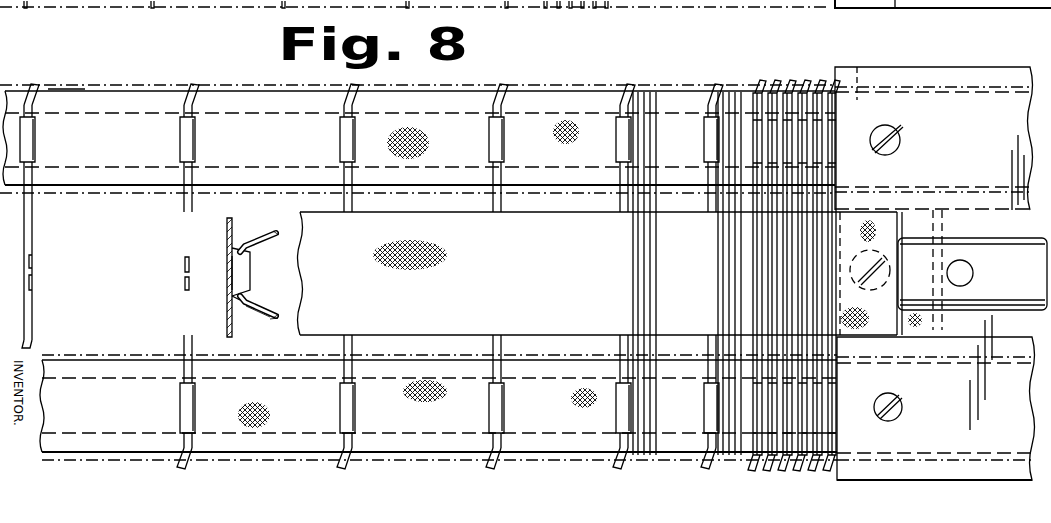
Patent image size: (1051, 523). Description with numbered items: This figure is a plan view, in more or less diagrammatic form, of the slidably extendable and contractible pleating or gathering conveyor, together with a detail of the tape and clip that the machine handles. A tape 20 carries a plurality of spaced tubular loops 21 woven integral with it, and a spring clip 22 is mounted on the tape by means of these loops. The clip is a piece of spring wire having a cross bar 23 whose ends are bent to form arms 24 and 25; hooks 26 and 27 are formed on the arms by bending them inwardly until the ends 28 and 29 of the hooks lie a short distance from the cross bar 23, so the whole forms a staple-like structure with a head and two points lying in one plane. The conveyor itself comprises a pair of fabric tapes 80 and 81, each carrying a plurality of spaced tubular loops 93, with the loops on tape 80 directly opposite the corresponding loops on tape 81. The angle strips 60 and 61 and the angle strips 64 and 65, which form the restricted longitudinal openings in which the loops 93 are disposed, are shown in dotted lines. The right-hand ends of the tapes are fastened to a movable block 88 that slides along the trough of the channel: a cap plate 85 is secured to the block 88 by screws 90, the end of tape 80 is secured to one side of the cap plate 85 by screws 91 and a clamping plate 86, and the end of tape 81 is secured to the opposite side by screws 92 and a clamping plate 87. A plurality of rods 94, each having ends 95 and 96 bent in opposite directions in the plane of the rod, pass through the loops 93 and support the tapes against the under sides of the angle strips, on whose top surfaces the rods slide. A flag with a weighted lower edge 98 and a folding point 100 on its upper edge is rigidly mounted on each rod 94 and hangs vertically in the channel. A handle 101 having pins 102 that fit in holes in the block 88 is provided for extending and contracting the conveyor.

The tape 20 is at (433, 323).
The tubular loops 21 is at (240, 283).
The spring clip 22 is at (273, 323).
The cross bar 23 is at (226, 301).
The arm 24 is at (252, 236).
The arm 25 is at (252, 322).
The hook 26 is at (269, 242).
The hook 27 is at (276, 313).
The end of hook 28 is at (249, 264).
The end of hook 29 is at (247, 304).
The angle strip 60 is at (67, 85).
The angle strip 61 is at (139, 194).
The angle strip 64 is at (72, 356).
The angle strip 65 is at (74, 458).
The fabric tape 80 is at (115, 98).
The fabric tape 81 is at (107, 370).
The cap plate 85 is at (928, 75).
The clamping plate 86 is at (858, 68).
The clamping plate 87 is at (832, 472).
The movable block 88 is at (884, 8).
The screw 90 is at (866, 258).
The screw 91 is at (892, 135).
The screw 92 is at (895, 413).
The tubular loops 93 is at (36, 139).
The rod 94 is at (34, 200).
The rod end 95 is at (34, 82).
The rod end 96 is at (190, 467).
The weighted lower edge 98 is at (184, 301).
The folding point 100 is at (184, 273).
The handle 101 is at (990, 250).
The pin 102 is at (974, 276).